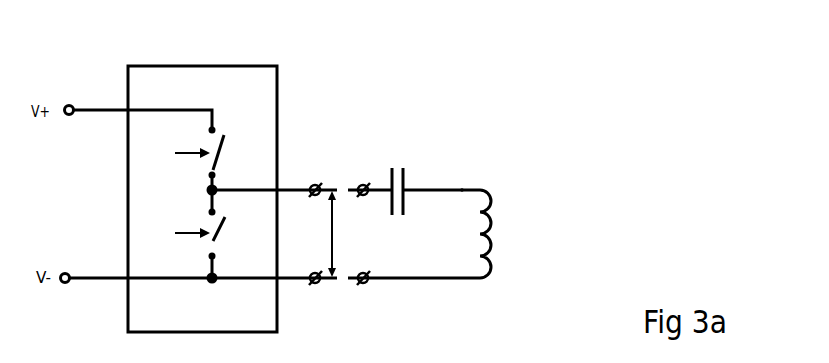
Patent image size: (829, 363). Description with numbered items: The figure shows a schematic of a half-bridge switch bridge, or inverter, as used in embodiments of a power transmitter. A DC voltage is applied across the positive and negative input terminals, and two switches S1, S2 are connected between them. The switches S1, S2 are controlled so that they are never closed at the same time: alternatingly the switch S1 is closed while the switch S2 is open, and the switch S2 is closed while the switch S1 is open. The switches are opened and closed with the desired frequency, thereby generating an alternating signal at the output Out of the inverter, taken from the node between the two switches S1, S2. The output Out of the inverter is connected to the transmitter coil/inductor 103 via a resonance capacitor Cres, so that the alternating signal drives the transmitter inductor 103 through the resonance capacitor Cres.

The switch S1 is at (218, 168).
The switch S2 is at (207, 241).
The resonance capacitor Cres is at (403, 168).
The transmitter coil/inductor 103 is at (530, 198).
The output Out is at (345, 234).